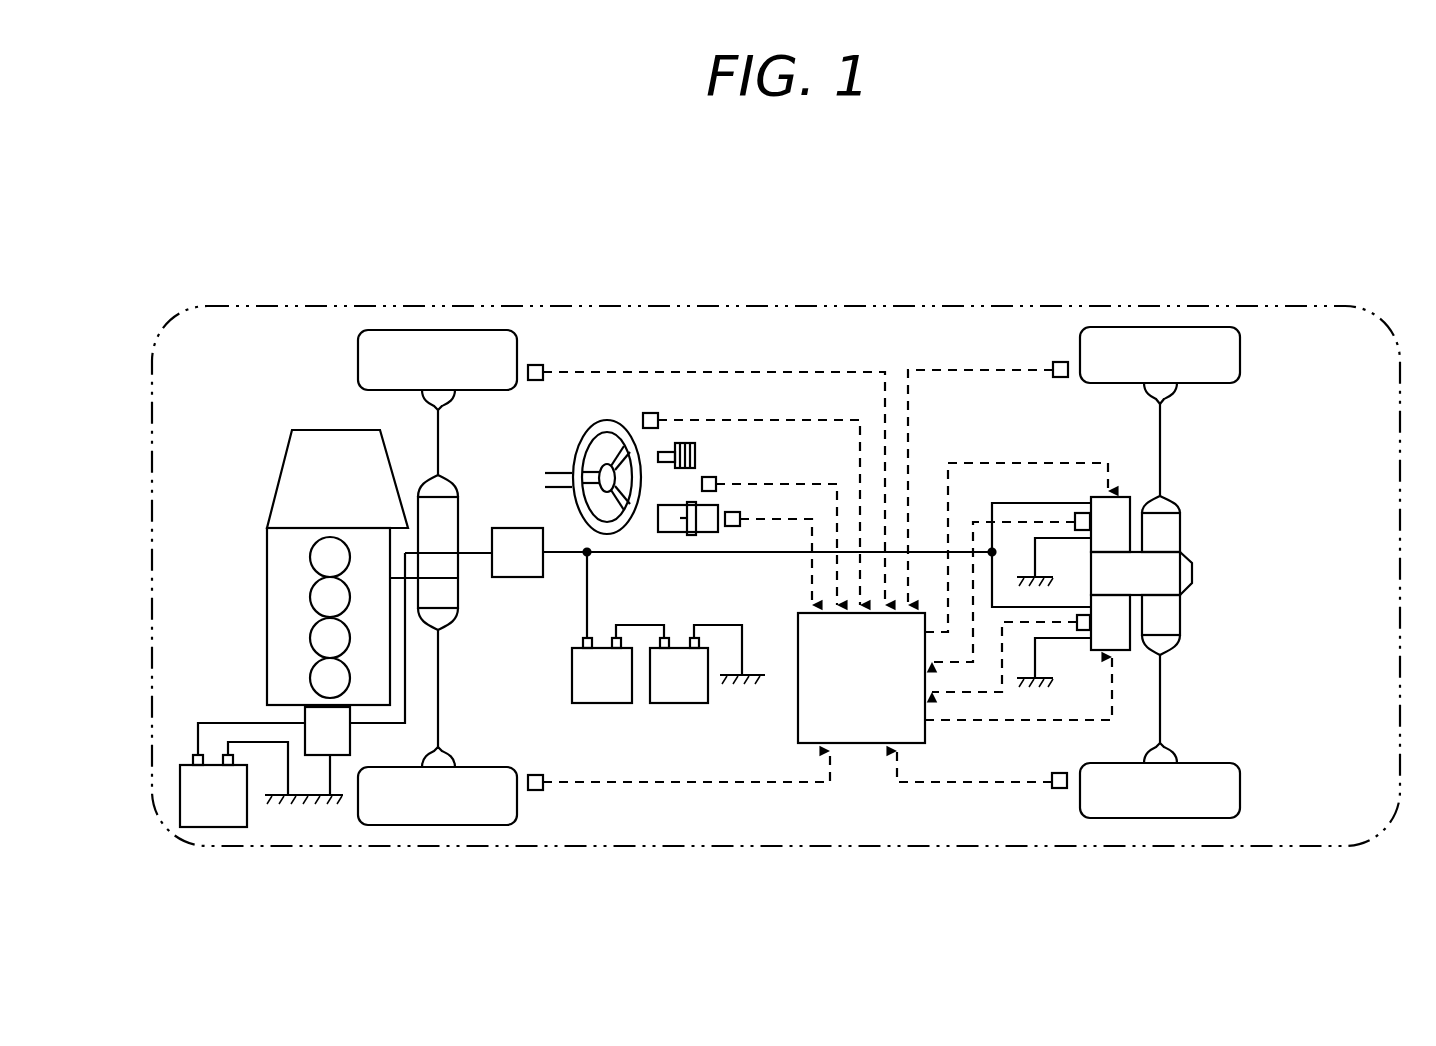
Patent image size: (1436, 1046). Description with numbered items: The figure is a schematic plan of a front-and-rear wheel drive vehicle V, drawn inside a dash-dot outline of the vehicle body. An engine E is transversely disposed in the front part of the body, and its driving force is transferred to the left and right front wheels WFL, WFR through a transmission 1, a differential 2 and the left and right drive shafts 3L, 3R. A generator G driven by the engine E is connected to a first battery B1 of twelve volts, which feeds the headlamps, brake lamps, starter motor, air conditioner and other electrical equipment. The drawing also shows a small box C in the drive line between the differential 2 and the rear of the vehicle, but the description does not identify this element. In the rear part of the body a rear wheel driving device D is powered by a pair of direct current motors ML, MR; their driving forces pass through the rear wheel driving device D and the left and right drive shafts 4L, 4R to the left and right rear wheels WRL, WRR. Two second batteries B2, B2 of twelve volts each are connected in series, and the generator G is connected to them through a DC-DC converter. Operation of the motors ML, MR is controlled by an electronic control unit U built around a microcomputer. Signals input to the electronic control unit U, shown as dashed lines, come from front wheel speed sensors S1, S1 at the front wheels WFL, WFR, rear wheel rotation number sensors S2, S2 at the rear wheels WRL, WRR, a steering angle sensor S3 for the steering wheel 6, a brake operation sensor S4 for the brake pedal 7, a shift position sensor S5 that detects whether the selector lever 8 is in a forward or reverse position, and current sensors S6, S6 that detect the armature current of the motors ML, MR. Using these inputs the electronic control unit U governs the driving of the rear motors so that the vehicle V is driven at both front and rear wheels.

The vehicle V is at (868, 282).
The transmission 1 is at (287, 487).
The differential 2 is at (445, 535).
The right drive shaft 3R is at (440, 442).
The left drive shaft 3L is at (440, 722).
The right drive shaft 4R is at (1163, 452).
The left drive shaft 4L is at (1163, 720).
The steering wheel 6 is at (590, 435).
The brake pedal 7 is at (698, 442).
The selector lever 8 is at (691, 536).
The engine E is at (270, 622).
The generator G is at (340, 748).
The clutch C is at (529, 570).
The electronic control unit U is at (875, 697).
The rear wheel driving device D is at (1175, 590).
The first battery B1 is at (215, 814).
The second battery B2 is at (609, 696).
The direct current motor MR is at (1118, 503).
The direct current motor ML is at (1118, 643).
The front wheel speed sensor S1 is at (540, 365).
The rear wheel rotation number sensor S2 is at (1055, 365).
The steering angle sensor S3 is at (655, 414).
The brake operation sensor S4 is at (715, 478).
The shift position sensor S5 is at (742, 513).
The current sensor S6 is at (1082, 514).
The right front wheel WFR is at (412, 345).
The left front wheel WFL is at (412, 806).
The right rear wheel WRR is at (1162, 338).
The left rear wheel WRL is at (1170, 806).